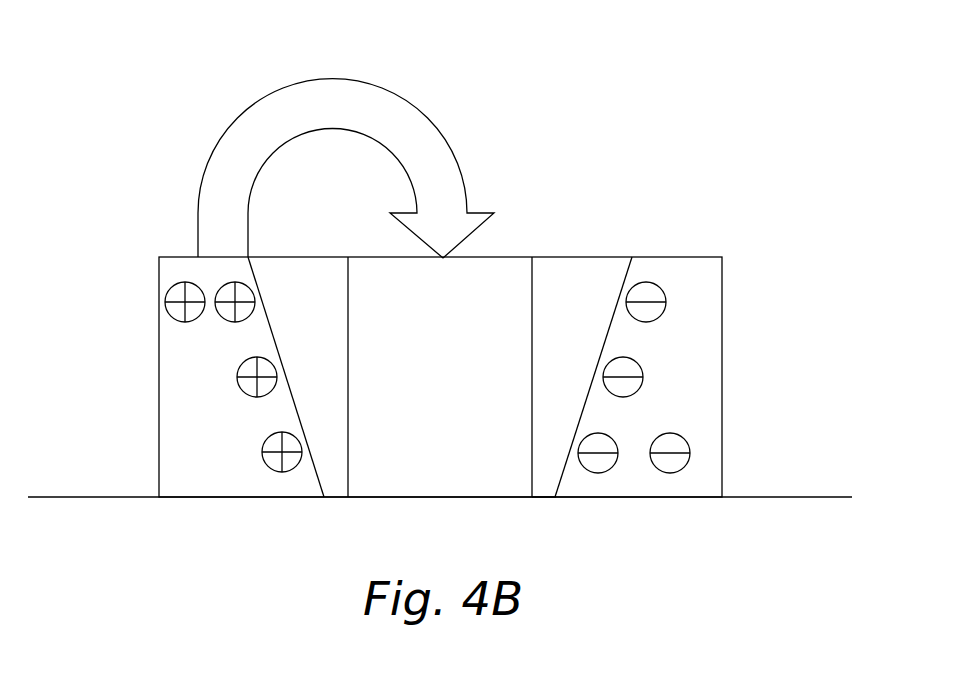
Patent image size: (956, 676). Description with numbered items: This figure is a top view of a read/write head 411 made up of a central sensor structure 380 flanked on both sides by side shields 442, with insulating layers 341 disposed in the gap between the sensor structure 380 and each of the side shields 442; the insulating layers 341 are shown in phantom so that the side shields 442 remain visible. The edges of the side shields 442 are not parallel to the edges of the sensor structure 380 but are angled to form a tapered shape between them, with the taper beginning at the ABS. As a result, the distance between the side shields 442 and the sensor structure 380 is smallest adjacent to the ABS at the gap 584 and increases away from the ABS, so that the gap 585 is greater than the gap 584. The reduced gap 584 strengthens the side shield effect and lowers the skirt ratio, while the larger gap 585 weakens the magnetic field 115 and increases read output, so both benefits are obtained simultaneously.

The magnetic field 115 is at (243, 113).
The read/write head 411 is at (660, 120).
The sensor structure 380 is at (513, 257).
The side shields 442 is at (158, 375).
The insulating layers 341 is at (324, 307).
The gap 585 is at (583, 258).
The gap 584 is at (543, 498).
The air bearing surface ABS is at (110, 495).